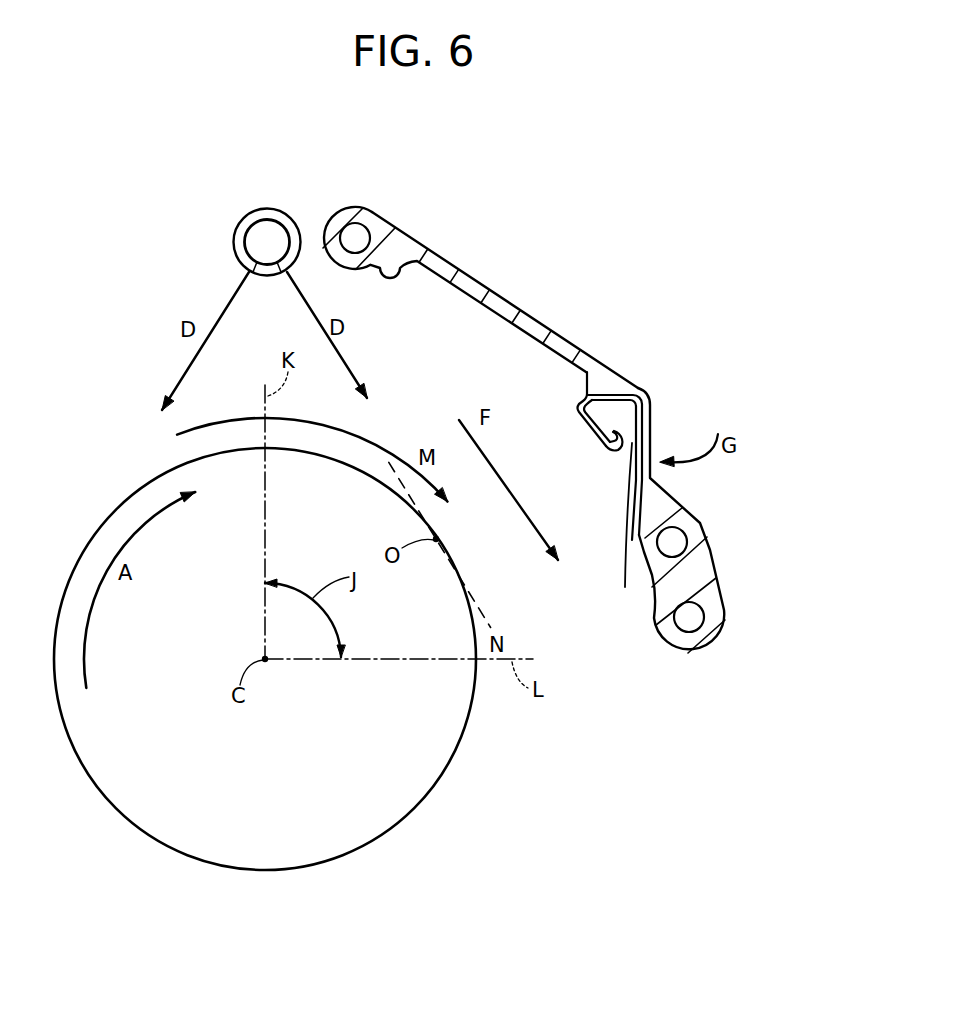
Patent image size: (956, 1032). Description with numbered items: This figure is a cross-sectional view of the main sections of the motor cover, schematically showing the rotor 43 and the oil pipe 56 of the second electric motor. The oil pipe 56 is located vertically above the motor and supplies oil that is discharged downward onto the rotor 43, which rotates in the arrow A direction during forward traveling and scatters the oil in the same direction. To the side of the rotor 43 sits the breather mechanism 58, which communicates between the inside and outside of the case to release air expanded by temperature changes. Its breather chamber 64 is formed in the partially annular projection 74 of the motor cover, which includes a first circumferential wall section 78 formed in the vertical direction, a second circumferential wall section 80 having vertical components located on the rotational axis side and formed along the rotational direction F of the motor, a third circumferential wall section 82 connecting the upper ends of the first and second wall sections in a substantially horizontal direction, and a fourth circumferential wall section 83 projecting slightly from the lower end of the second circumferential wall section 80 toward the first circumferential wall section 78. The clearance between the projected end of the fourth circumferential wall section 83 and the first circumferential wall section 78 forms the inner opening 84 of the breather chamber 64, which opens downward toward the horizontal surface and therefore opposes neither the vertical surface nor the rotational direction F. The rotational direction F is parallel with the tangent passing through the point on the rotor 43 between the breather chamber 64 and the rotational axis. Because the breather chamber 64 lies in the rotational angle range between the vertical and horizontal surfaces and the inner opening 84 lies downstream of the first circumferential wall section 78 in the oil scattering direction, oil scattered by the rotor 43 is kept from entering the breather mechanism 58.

The rotor 43 is at (383, 808).
The oil pipe 56 is at (268, 209).
The breather mechanism 58 is at (592, 202).
The partially annular projection 74 is at (445, 253).
The third circumferential wall section 82 is at (616, 390).
The breather chamber 64 is at (620, 412).
The first circumferential wall section 78 is at (648, 427).
The second circumferential wall section 80 is at (583, 420).
The fourth circumferential wall section 83 is at (612, 443).
The inner opening 84 is at (623, 530).